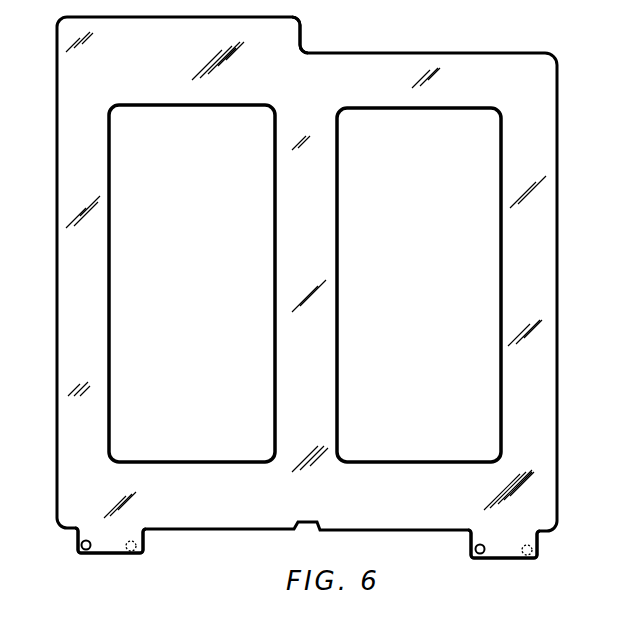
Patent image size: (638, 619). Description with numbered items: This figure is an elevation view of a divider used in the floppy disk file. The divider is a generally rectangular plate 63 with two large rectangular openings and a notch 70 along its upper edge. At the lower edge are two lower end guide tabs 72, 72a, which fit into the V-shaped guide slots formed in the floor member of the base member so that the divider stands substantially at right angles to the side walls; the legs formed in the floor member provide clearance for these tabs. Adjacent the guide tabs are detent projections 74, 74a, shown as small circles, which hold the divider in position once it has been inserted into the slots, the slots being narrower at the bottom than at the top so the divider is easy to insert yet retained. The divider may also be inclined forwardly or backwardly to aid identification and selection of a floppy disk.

The frame member 63 is at (558, 90).
The notch 70 is at (305, 38).
The lower end guide tab 72 is at (143, 534).
The lower end guide tab 72a is at (554, 536).
The detent projection 74 is at (80, 545).
The detent projection 74a is at (475, 549).